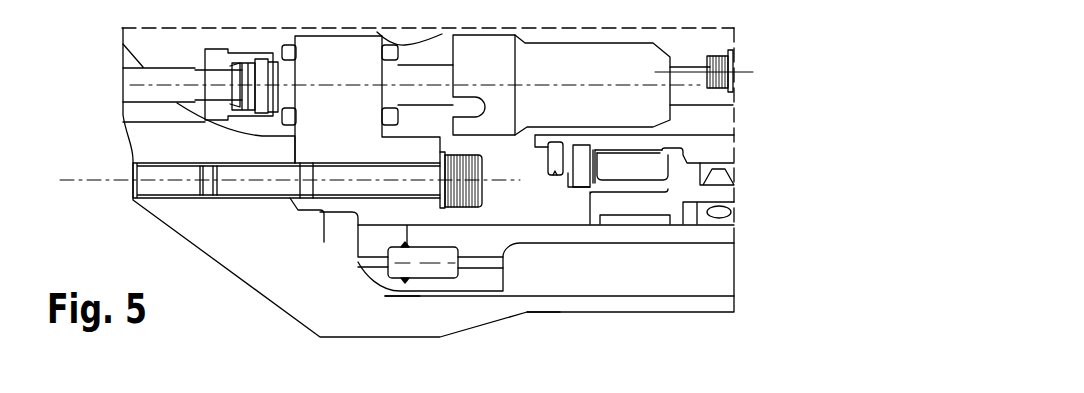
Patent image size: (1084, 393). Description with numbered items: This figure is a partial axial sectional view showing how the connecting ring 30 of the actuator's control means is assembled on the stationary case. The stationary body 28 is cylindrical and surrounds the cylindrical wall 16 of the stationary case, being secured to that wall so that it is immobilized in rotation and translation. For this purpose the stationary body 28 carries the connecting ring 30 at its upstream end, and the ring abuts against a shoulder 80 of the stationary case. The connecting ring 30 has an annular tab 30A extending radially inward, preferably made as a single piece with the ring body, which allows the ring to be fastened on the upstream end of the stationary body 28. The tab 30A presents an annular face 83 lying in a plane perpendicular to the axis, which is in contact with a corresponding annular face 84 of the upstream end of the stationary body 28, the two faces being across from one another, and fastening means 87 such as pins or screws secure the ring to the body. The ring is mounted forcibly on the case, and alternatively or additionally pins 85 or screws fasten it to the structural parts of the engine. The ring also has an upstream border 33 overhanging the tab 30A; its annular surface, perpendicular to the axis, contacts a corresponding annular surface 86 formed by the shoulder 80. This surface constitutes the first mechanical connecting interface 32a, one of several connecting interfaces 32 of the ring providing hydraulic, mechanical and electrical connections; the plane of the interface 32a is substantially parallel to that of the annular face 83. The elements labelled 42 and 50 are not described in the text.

The cylindrical wall 16 is at (480, 302).
The stationary body 28 is at (618, 233).
The connecting ring 30 is at (417, 140).
The annular tab 30A is at (378, 242).
The connecting interfaces 32 is at (342, 70).
The first mechanical connecting interface 32a is at (294, 152).
The upstream border 33 is at (291, 197).
The pin 42 is at (425, 317).
The bottom plate 50 is at (543, 352).
The shoulder 80 is at (284, 204).
The annular face 83 is at (420, 285).
The annular face 84 is at (407, 230).
The pins 85 is at (233, 186).
The annular surface 86 is at (303, 138).
The fastening means 87 is at (450, 267).